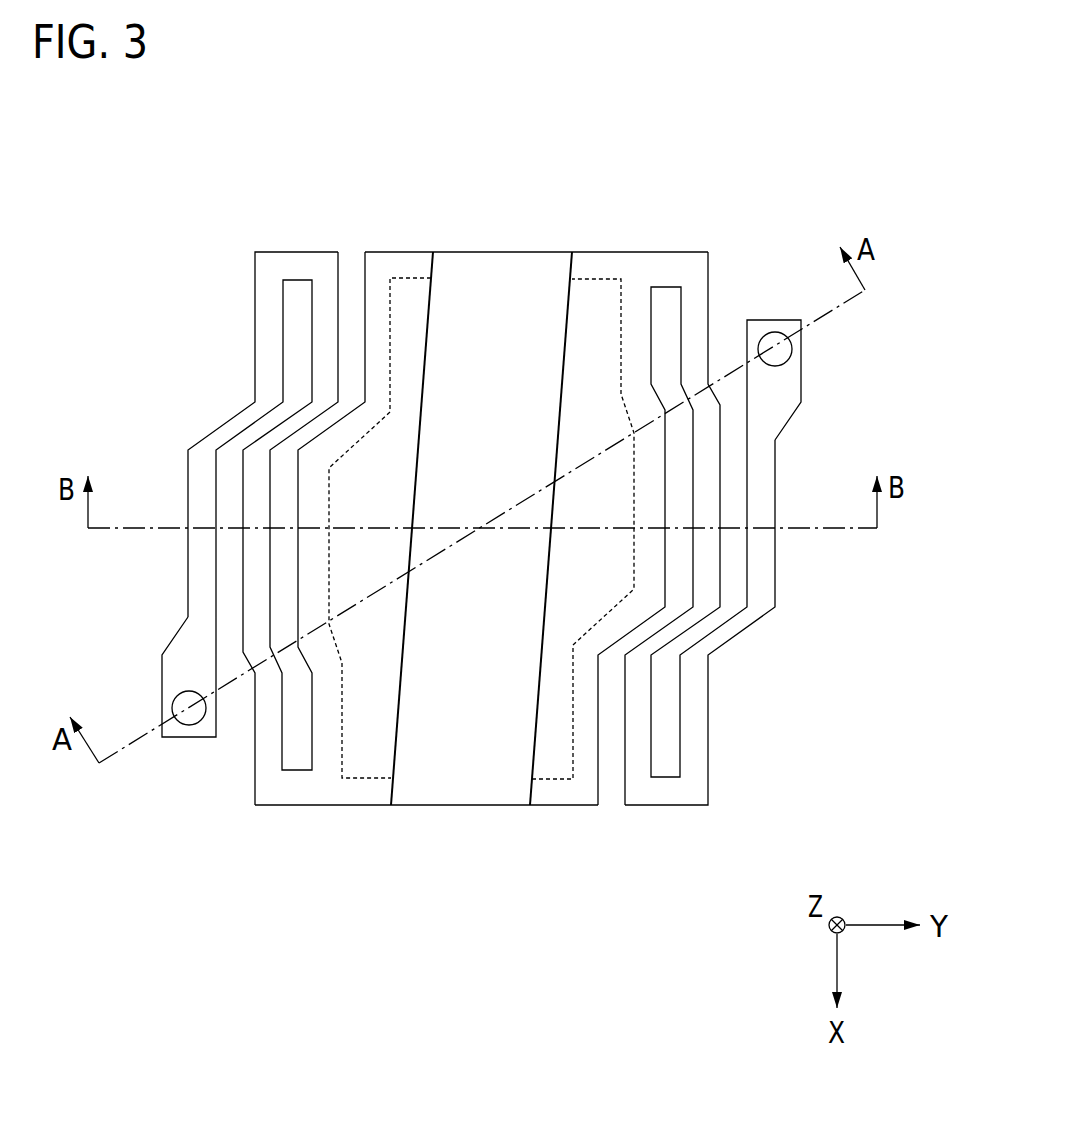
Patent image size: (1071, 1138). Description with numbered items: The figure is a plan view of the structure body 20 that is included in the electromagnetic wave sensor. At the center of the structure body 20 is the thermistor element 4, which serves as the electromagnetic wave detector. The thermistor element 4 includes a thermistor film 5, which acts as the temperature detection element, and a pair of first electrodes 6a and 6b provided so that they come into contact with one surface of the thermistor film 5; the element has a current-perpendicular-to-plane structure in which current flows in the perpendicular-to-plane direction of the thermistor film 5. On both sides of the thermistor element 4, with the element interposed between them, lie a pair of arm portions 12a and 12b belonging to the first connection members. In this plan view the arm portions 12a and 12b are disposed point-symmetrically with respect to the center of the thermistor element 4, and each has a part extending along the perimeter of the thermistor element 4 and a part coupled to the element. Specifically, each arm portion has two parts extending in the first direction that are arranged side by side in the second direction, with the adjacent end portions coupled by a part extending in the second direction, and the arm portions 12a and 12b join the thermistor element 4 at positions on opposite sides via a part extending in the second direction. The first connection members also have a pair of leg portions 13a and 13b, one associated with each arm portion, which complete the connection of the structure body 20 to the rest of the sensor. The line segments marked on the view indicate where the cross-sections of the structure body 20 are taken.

The structure body 20 is at (280, 136).
The thermistor element 4 is at (543, 242).
The thermistor film 5 is at (498, 295).
The first electrode 6a is at (598, 300).
The first electrode 6b is at (412, 300).
The arm portion 12a is at (707, 475).
The arm portion 12b is at (253, 553).
The leg portion 13a is at (771, 333).
The leg portion 13b is at (193, 718).